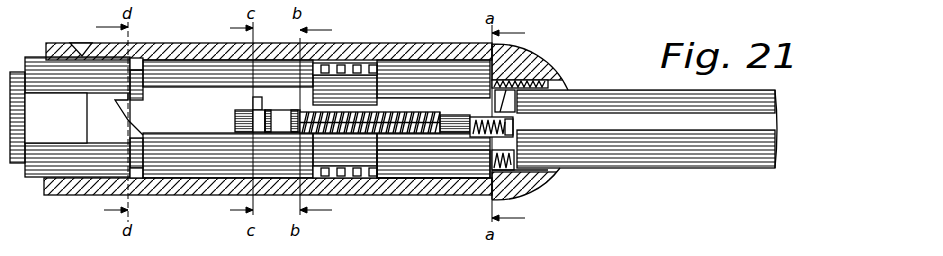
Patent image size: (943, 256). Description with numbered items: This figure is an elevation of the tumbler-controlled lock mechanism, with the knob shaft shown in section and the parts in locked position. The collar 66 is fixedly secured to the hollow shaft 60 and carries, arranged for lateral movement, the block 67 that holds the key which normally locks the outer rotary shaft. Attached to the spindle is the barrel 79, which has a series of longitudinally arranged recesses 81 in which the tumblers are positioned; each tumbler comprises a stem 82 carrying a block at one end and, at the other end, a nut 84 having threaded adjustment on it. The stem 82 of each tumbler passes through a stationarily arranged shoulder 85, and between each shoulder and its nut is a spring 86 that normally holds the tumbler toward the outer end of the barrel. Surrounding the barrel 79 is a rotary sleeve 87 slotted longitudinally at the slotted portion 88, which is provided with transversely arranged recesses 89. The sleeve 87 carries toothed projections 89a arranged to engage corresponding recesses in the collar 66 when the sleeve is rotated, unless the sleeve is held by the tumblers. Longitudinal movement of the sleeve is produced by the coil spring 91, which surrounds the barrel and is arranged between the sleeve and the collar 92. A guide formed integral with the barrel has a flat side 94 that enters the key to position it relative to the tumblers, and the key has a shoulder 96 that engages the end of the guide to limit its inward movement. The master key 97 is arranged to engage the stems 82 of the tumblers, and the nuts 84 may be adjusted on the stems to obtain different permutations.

The hollow shaft 60 is at (198, 188).
The collar 66 is at (38, 203).
The block 67 is at (56, 118).
The barrel 79 is at (348, 95).
The recesses 81 is at (392, 134).
The stem 82 is at (500, 82).
The nut 84 is at (455, 125).
The shoulder 85 is at (292, 133).
The spring 86 is at (402, 113).
The rotary sleeve 87 is at (168, 87).
The slotted portion 88 is at (272, 116).
The recesses 89 is at (253, 100).
The toothed projections 89a is at (143, 118).
The coil spring 91 is at (365, 68).
The collar 92 is at (428, 172).
The flat side 94 is at (543, 83).
The shoulder 96 is at (120, 118).
The master key 97 is at (589, 110).